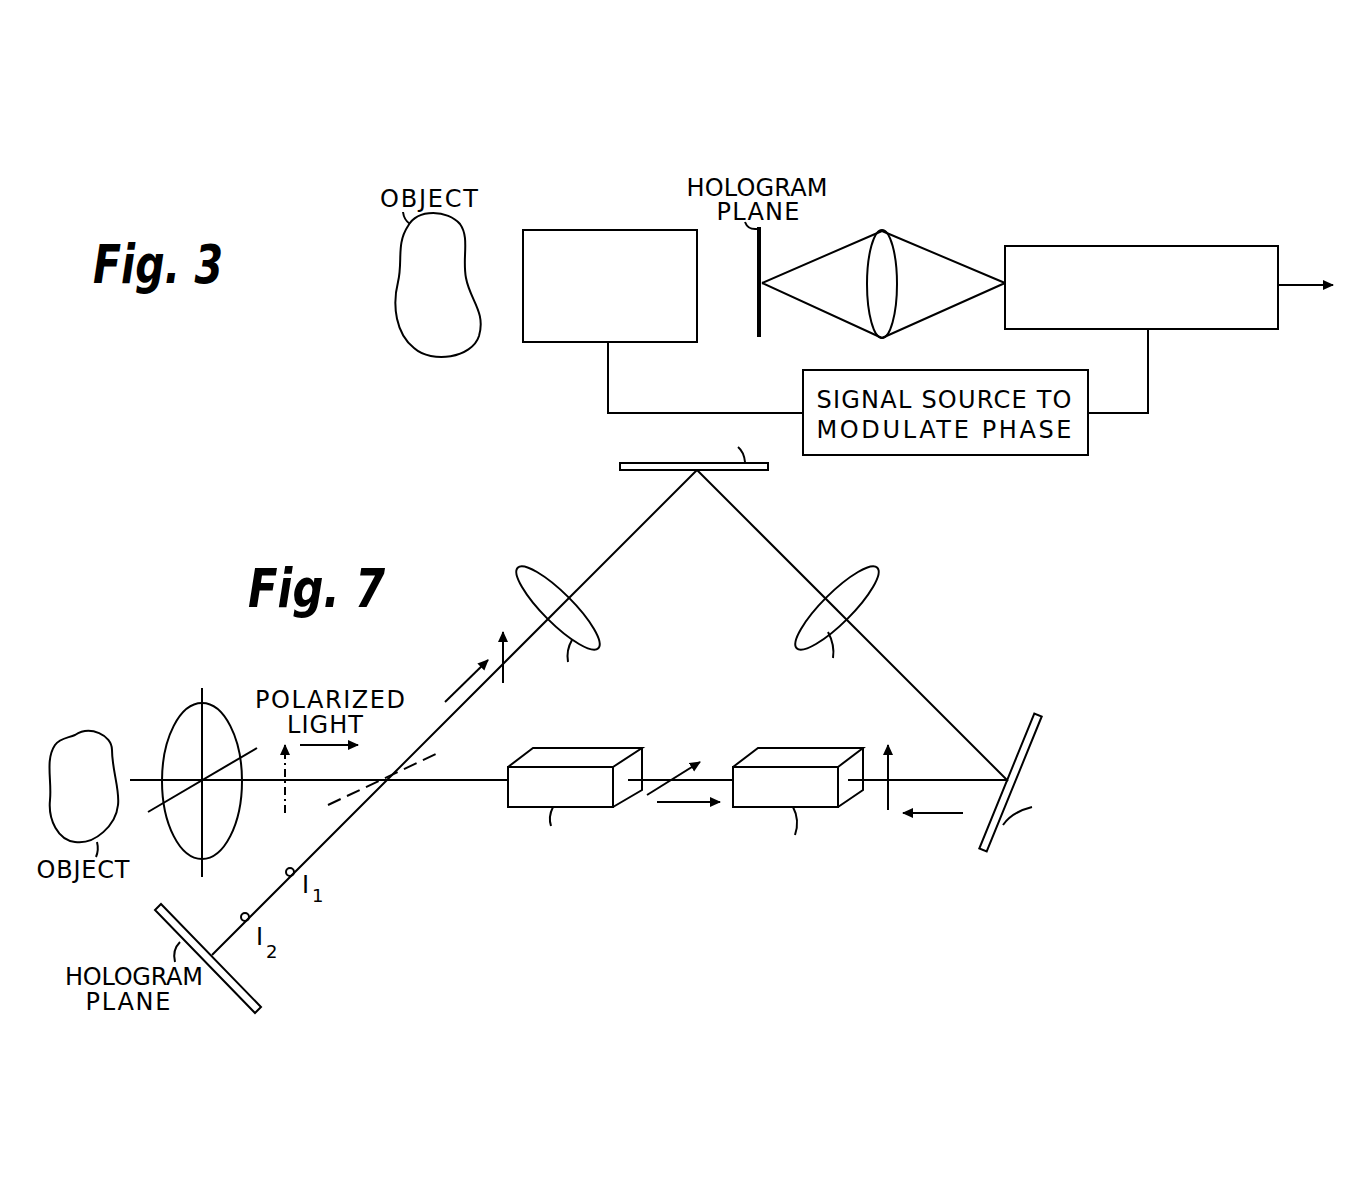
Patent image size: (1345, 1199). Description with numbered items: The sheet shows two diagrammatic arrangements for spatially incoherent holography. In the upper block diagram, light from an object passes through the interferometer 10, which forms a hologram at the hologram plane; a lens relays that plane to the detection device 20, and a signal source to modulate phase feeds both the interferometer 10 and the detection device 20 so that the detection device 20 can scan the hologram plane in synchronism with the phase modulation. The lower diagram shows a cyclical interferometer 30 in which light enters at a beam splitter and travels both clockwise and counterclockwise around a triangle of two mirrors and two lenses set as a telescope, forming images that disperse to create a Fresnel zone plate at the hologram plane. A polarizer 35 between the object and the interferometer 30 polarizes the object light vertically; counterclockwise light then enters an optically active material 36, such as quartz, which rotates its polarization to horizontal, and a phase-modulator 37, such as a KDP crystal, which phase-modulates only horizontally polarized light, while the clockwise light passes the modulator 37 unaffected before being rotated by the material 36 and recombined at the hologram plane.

In FIG. 3, the interferometer 10 is at (621, 229).
In FIG. 3, the detection device 20 is at (1130, 245).
In FIG. 7, the cyclical interferometer 30 is at (680, 640).
In FIG. 7, the polarizer 35 is at (178, 728).
In FIG. 7, the optically active material 36 is at (605, 748).
In FIG. 7, the phase-modulator 37 is at (808, 748).